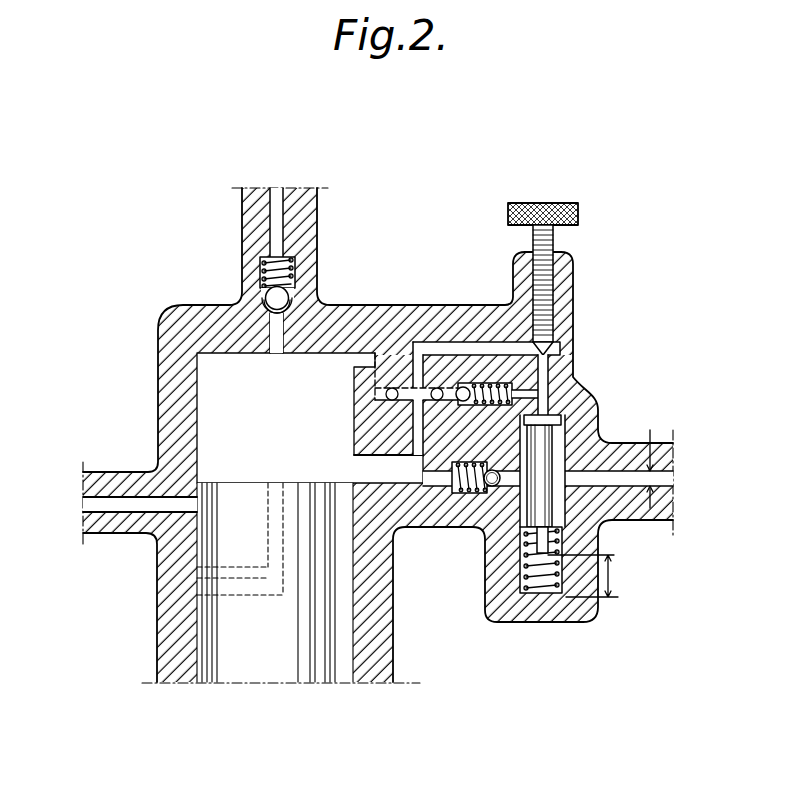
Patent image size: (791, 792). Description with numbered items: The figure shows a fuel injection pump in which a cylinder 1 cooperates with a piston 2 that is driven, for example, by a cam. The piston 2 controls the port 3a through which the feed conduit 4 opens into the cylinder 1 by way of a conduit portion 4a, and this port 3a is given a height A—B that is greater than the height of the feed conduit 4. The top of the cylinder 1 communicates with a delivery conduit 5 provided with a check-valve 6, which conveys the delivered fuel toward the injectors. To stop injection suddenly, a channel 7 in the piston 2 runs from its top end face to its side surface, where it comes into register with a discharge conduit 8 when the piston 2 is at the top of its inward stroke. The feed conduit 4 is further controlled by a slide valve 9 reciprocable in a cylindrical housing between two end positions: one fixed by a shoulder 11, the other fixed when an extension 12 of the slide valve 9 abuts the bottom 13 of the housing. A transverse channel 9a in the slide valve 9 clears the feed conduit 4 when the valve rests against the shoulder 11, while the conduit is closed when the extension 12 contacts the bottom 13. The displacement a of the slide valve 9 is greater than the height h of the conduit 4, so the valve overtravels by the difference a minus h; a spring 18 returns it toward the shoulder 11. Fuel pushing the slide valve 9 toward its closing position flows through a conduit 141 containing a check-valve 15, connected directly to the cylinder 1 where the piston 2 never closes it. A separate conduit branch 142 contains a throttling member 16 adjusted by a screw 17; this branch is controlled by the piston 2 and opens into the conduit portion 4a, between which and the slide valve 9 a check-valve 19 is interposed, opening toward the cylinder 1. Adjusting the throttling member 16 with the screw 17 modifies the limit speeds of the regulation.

The cylinder 1 is at (205, 552).
The piston 2 is at (210, 617).
The port 3a is at (357, 459).
The feed conduit 4 is at (432, 478).
The conduit portion 4a is at (412, 473).
The delivery conduit 5 is at (282, 219).
The check-valve 6 is at (279, 298).
The channel 7 is at (197, 568).
The discharge conduit 8 is at (121, 500).
The slide valve 9 is at (552, 443).
The transverse channel 9a is at (583, 463).
The shoulder 11 is at (585, 390).
The extension 12 is at (553, 546).
The bottom 13 is at (552, 594).
The conduit 141 is at (366, 357).
The conduit branch 142 is at (451, 346).
The check-valve 15 is at (460, 387).
The throttling member 16 is at (555, 352).
The screw 17 is at (555, 248).
The spring 18 is at (525, 583).
The check-valve 19 is at (490, 487).
The upper limit of port A is at (369, 464).
The lower limit of port B is at (383, 480).
The displacement a is at (585, 576).
The height of conduit h is at (652, 458).